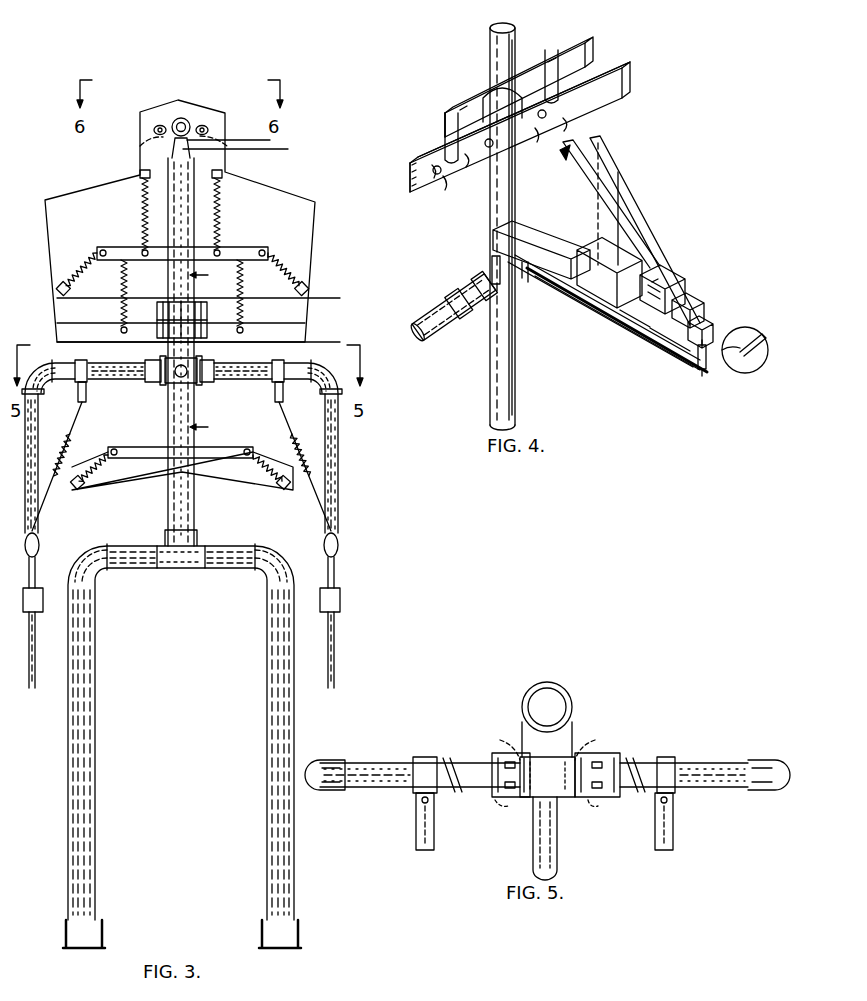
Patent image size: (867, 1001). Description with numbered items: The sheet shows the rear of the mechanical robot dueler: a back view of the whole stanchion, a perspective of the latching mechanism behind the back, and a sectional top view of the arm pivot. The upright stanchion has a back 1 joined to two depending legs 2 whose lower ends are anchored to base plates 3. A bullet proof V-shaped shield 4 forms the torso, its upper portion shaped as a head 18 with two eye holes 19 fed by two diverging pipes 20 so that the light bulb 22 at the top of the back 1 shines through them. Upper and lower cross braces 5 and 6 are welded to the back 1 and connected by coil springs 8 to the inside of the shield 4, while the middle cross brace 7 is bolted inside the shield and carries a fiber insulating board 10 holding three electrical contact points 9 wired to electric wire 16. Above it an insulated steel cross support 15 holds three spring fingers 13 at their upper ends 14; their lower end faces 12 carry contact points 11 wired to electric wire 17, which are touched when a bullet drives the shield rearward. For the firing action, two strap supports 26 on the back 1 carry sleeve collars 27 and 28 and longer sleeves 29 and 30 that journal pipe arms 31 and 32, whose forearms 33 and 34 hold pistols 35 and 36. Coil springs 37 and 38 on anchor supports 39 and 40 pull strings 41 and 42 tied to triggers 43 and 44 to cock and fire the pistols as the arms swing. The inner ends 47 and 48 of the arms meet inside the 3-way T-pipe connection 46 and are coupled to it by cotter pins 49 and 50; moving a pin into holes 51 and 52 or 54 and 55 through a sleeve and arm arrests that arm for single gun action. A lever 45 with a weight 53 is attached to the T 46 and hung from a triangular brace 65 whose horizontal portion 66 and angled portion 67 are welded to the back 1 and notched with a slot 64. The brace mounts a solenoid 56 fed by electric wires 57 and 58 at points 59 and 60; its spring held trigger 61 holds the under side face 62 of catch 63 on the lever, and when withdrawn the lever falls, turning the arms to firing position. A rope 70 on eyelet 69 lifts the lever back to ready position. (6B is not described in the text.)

In FIG. 3, the back 1 is at (168, 500).
In FIG. 4, the back 1 is at (514, 42).
In FIG. 5, the back 1 is at (560, 692).
In FIG. 3, the legs 2 is at (96, 876).
In FIG. 3, the base plate 3 is at (103, 938).
In FIG. 3, the V-shaped shield 4 is at (206, 351).
In FIG. 3, the upper cross brace 5 is at (124, 248).
In FIG. 3, the lower cross brace 6 is at (154, 446).
In FIG. 3, the middle cross brace 7 is at (85, 332).
In FIG. 4, the middle cross brace 7 is at (408, 180).
In FIG. 3, the coil springs 8 is at (140, 215).
In FIG. 4, the electrical contact points 9 is at (487, 142).
In FIG. 3, the fiber insulating board 10 is at (204, 330).
In FIG. 4, the fiber insulating board 10 is at (444, 182).
In FIG. 4, the electrical contact points 11 is at (450, 182).
In FIG. 4, the lower end faces 12 is at (470, 160).
In FIG. 4, the spring fingers 13 is at (496, 96).
In FIG. 4, the upper ends 14 is at (450, 110).
In FIG. 3, the insulated steel cross support 15 is at (157, 312).
In FIG. 4, the insulated steel cross support 15 is at (440, 132).
In FIG. 3, the electric wire 16 is at (330, 344).
In FIG. 4, the electric wire 16 is at (623, 83).
In FIG. 3, the electric wire 17 is at (331, 297).
In FIG. 4, the electric wire 17 is at (573, 33).
In FIG. 3, the head 18 is at (186, 106).
In FIG. 3, the eyes 19 is at (142, 142).
In FIG. 3, the pipes 20 is at (162, 124).
In FIG. 3, the light bulb 22 is at (181, 118).
In FIG. 3, the strap supports 26 is at (170, 362).
In FIG. 4, the strap supports 26 is at (492, 256).
In FIG. 5, the strap supports 26 is at (522, 730).
In FIG. 3, the sleeve collar 27 is at (206, 383).
In FIG. 5, the sleeve collar 27 is at (592, 750).
In FIG. 3, the sleeve collar 28 is at (156, 383).
In FIG. 4, the sleeve collar 28 is at (484, 264).
In FIG. 5, the sleeve collar 28 is at (498, 750).
In FIG. 3, the sleeve 29 is at (266, 381).
In FIG. 5, the sleeve 29 is at (676, 790).
In FIG. 3, the sleeve 30 is at (124, 381).
In FIG. 4, the sleeve 30 is at (466, 286).
In FIG. 5, the sleeve 30 is at (414, 790).
In FIG. 3, the pipe arm 31 is at (304, 366).
In FIG. 5, the pipe arm 31 is at (716, 762).
In FIG. 3, the pipe arm 32 is at (58, 368).
In FIG. 4, the pipe arm 32 is at (436, 316).
In FIG. 5, the pipe arm 32 is at (372, 758).
In FIG. 3, the forearm 33 is at (338, 446).
In FIG. 5, the forearm 33 is at (768, 760).
In FIG. 3, the forearm 34 is at (38, 446).
In FIG. 5, the forearm 34 is at (330, 760).
In FIG. 3, the pistol 35 is at (338, 543).
In FIG. 3, the pistol 36 is at (40, 543).
In FIG. 3, the coil spring 37 is at (290, 448).
In FIG. 3, the coil spring 38 is at (78, 448).
In FIG. 3, the anchor support 39 is at (278, 360).
In FIG. 5, the anchor support 39 is at (673, 838).
In FIG. 3, the anchor support 40 is at (82, 360).
In FIG. 5, the anchor support 40 is at (416, 838).
In FIG. 3, the string 41 is at (306, 520).
In FIG. 3, the string 42 is at (55, 520).
In FIG. 3, the trigger 43 is at (338, 590).
In FIG. 3, the trigger 44 is at (36, 590).
In FIG. 4, the lever 45 is at (572, 304).
In FIG. 5, the lever 45 is at (560, 852).
In FIG. 4, the 3-way T-pipe connection 46 is at (526, 284).
In FIG. 5, the inner end 47 is at (578, 748).
In FIG. 5, the inner end 48 is at (512, 748).
In FIG. 5, the cotter pin 49 is at (578, 804).
In FIG. 5, the cotter pin 50 is at (496, 802).
In FIG. 5, the hole 51 is at (598, 762).
In FIG. 5, the hole 52 is at (626, 768).
In FIG. 4, the weight 53 is at (766, 356).
In FIG. 5, the hole 54 is at (498, 760).
In FIG. 5, the hole 55 is at (496, 770).
In FIG. 4, the solenoid 56 is at (645, 262).
In FIG. 4, the electric wire 57 is at (598, 143).
In FIG. 4, the electric wire 58 is at (618, 172).
In FIG. 4, the point 59 is at (598, 250).
In FIG. 4, the point 60 is at (662, 280).
In FIG. 4, the spring held trigger 61 is at (630, 318).
In FIG. 4, the under side face 62 is at (660, 335).
In FIG. 4, the catch 63 is at (690, 320).
In FIG. 4, the slot 64 is at (680, 300).
In FIG. 4, the triangular brace 65 is at (606, 208).
In FIG. 4, the horizontal portion 66 is at (522, 226).
In FIG. 4, the angled portion 67 is at (655, 270).
In FIG. 4, the eyelet 69 is at (702, 370).
In FIG. 4, the rope 70 is at (718, 336).
In FIG. 4, the channel 6B is at (598, 312).